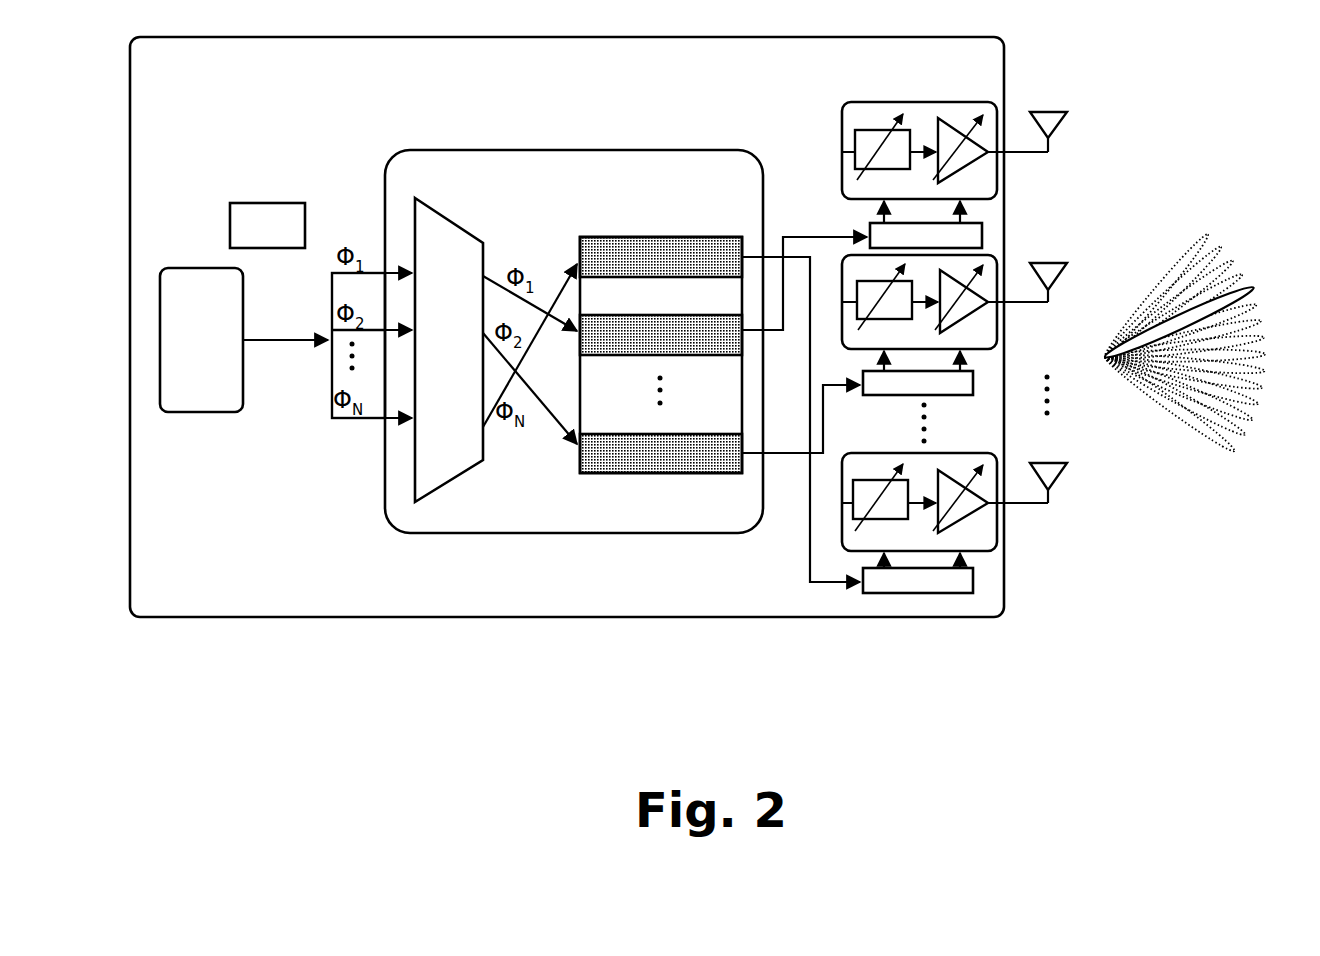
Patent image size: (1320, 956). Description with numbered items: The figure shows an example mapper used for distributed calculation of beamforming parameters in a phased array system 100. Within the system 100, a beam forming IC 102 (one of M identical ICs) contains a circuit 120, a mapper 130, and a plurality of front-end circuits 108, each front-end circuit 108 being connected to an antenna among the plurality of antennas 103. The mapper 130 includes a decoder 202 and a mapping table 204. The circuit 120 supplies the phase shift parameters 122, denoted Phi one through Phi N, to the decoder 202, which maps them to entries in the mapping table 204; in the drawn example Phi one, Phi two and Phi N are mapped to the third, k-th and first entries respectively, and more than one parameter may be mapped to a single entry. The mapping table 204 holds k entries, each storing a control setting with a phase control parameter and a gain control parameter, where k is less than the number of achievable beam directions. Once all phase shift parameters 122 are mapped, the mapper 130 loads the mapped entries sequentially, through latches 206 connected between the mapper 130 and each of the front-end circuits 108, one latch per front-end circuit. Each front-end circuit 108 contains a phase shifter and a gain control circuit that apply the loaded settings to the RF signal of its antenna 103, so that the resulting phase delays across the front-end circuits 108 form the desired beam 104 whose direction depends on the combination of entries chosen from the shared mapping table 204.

The system 100 is at (1030, 760).
The beam forming IC 102 is at (206, 92).
The plurality of antennas 103 is at (1080, 100).
The beam 104 is at (1175, 322).
The front-end circuits 108 is at (997, 95).
The circuit 120 is at (226, 356).
The phase shift parameters 122 is at (298, 340).
The mapper 130 is at (596, 191).
The decoder 202 is at (468, 365).
The mapping table 204 is at (663, 237).
The latches 206 is at (983, 236).